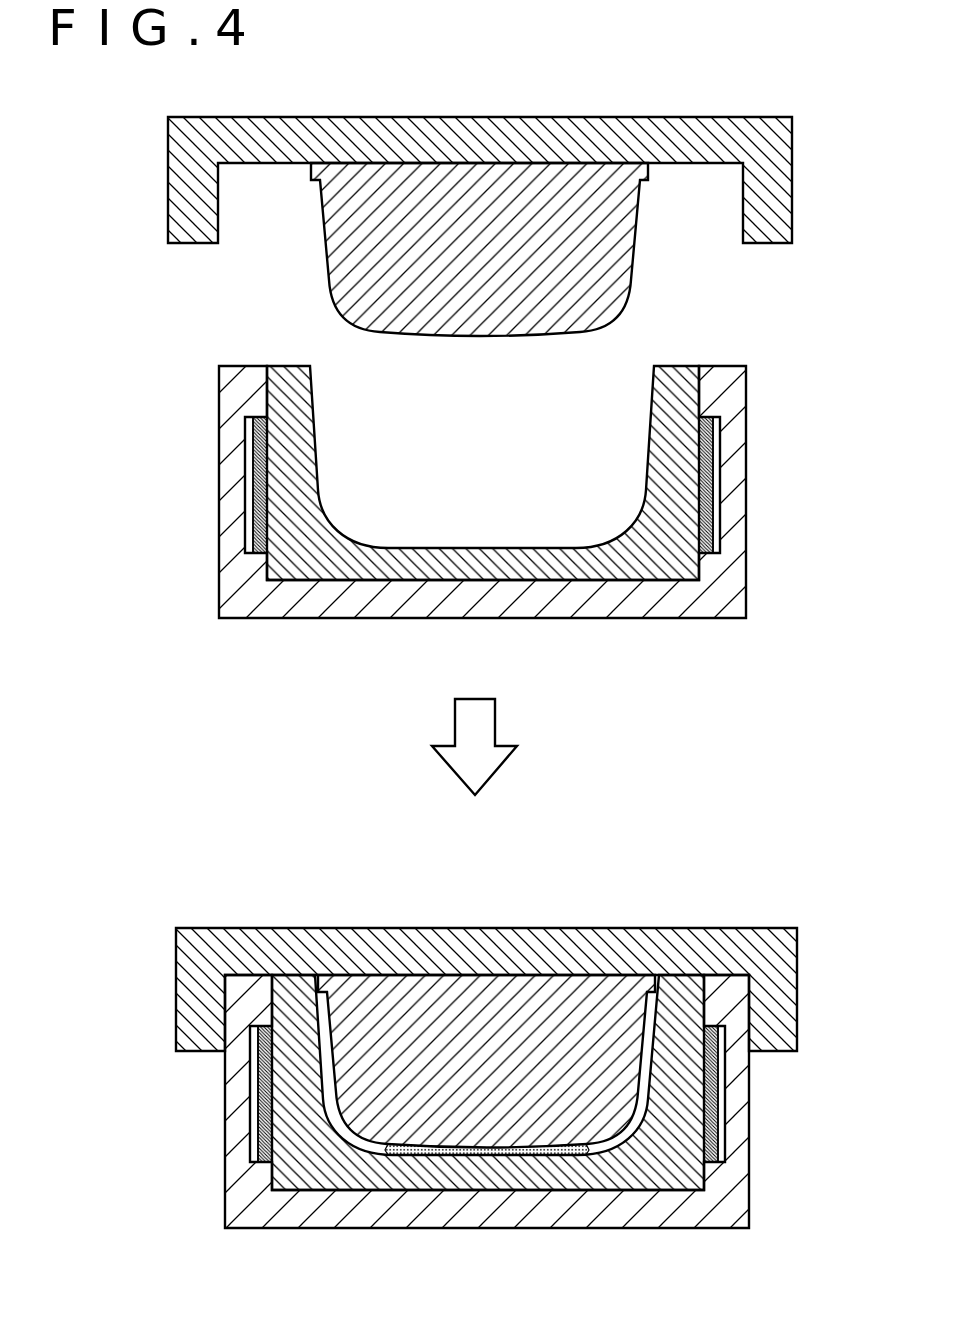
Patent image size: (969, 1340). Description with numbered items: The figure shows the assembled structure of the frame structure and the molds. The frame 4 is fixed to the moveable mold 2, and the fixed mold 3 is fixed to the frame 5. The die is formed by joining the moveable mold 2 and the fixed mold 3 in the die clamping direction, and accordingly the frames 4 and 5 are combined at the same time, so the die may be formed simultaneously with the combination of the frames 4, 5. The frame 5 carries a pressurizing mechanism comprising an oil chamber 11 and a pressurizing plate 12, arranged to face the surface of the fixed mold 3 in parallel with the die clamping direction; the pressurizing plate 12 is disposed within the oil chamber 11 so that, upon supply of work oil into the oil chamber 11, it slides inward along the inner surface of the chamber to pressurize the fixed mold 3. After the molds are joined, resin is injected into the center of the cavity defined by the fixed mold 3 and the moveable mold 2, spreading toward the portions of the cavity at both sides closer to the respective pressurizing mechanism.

The moveable mold 2 is at (453, 217).
The fixed mold 3 is at (685, 570).
The frame 4 is at (258, 118).
The frame 5 is at (730, 398).
The oil chamber 11 is at (249, 482).
The pressurizing plate 12 is at (256, 537).